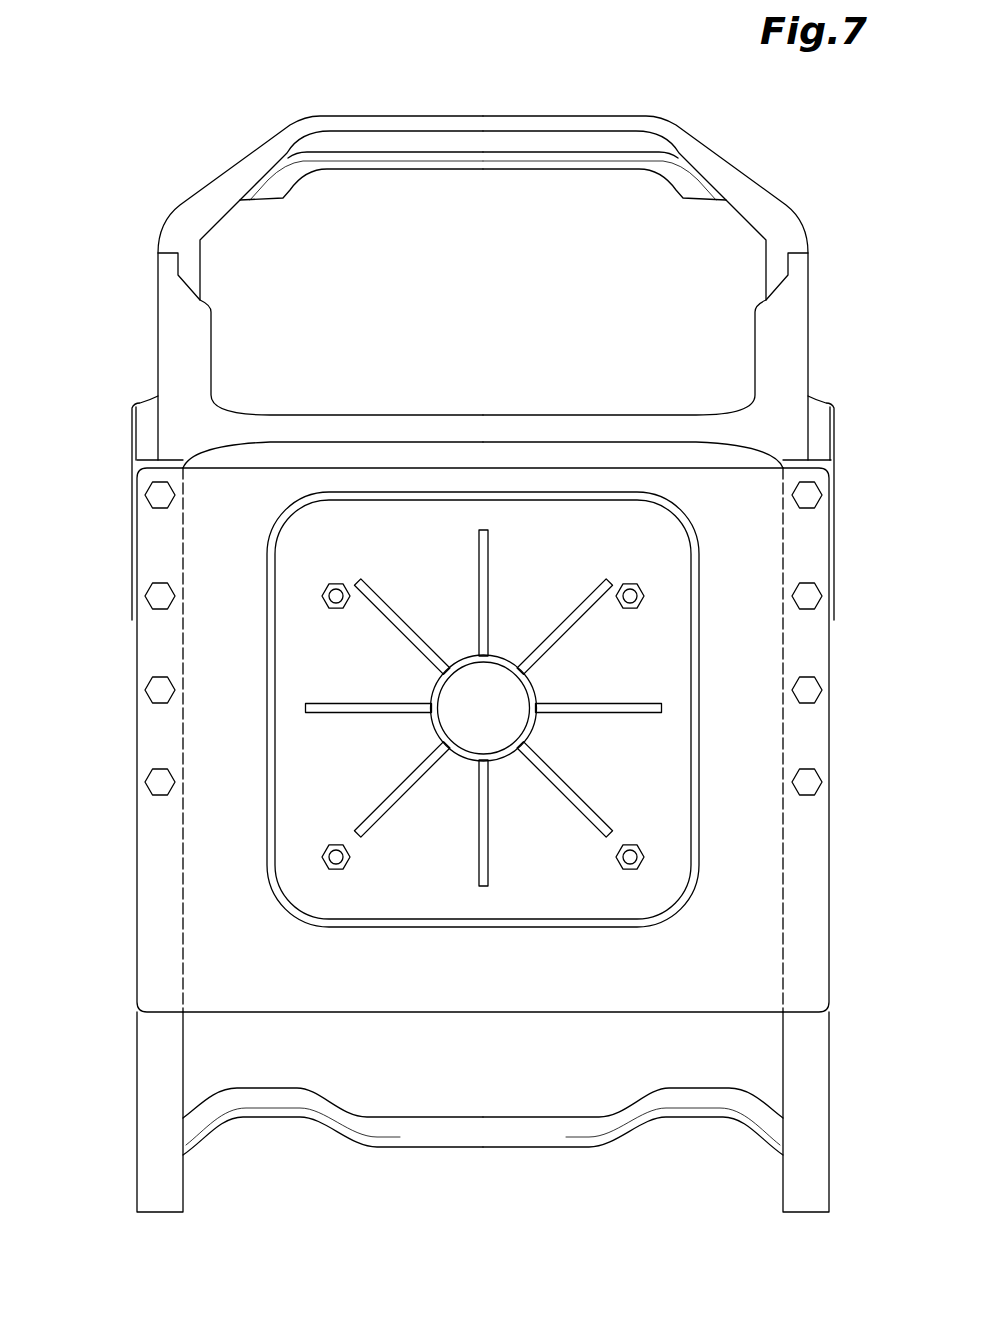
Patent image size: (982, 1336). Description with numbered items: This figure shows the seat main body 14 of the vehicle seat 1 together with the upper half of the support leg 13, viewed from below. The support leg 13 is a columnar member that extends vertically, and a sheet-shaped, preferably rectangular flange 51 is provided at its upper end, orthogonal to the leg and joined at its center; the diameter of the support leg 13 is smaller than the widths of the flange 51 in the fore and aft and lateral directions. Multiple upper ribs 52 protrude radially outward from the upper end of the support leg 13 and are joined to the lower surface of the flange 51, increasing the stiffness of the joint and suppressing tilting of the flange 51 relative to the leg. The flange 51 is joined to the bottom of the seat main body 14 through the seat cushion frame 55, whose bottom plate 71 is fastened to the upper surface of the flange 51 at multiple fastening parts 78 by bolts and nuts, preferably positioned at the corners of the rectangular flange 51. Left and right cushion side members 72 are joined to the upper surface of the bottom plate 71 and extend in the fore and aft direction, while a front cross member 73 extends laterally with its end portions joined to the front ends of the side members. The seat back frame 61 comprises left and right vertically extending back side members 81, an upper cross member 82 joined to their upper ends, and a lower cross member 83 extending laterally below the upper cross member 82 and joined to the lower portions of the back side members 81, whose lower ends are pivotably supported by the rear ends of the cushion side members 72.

The vehicle seat 1 is at (173, 100).
The support leg 13 is at (507, 763).
The seat main body 14 is at (760, 176).
The flange 51 is at (555, 907).
The upper ribs 52 is at (400, 795).
The seat cushion frame 55 is at (484, 822).
The seat back frame 61 is at (579, 114).
The bottom plate 71 is at (390, 1000).
The cushion side members 72 is at (146, 1071).
The front cross member 73 is at (484, 1130).
The fastening parts 78 is at (647, 596).
The back side members 81 is at (190, 268).
The upper cross member 82 is at (469, 122).
The lower cross member 83 is at (486, 427).